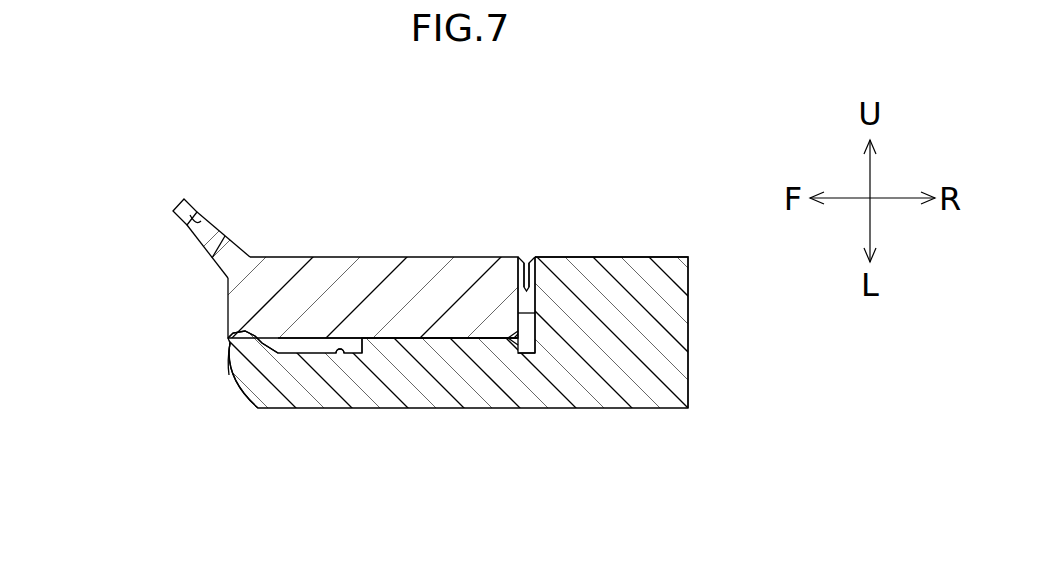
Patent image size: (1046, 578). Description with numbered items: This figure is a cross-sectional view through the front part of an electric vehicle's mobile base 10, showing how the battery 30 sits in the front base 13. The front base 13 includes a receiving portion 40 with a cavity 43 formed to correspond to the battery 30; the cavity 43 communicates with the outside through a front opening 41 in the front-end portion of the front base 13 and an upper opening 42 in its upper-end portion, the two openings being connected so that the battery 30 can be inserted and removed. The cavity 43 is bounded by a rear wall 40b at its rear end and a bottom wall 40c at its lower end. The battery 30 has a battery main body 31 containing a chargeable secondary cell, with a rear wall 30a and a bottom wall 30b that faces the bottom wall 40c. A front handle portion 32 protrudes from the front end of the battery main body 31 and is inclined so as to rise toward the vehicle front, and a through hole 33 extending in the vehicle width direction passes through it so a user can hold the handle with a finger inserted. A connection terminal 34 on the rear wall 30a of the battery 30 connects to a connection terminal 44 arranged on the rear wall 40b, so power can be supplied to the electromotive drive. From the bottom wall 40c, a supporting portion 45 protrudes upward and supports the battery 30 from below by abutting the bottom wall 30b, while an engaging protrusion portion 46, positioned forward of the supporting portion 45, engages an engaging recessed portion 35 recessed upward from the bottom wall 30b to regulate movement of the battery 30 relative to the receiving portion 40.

The mobile base 10 is at (673, 253).
The front base 13 is at (613, 257).
The battery 30 is at (320, 255).
The rear wall 30a is at (537, 318).
The bottom wall 30b is at (308, 340).
The battery main body 31 is at (386, 287).
The front handle portion 32 is at (175, 205).
The through hole 33 is at (207, 213).
The connection terminal 34 is at (527, 257).
The engaging recessed portion 35 is at (233, 365).
The receiving portion 40 is at (258, 408).
The rear wall 40b is at (522, 353).
The bottom wall 40c is at (343, 348).
The front opening 41 is at (230, 342).
The upper opening 42 is at (529, 257).
The cavity 43 is at (535, 285).
The connection terminal 44 is at (535, 268).
The supporting portion 45 is at (430, 345).
The engaging protrusion portion 46 is at (233, 316).